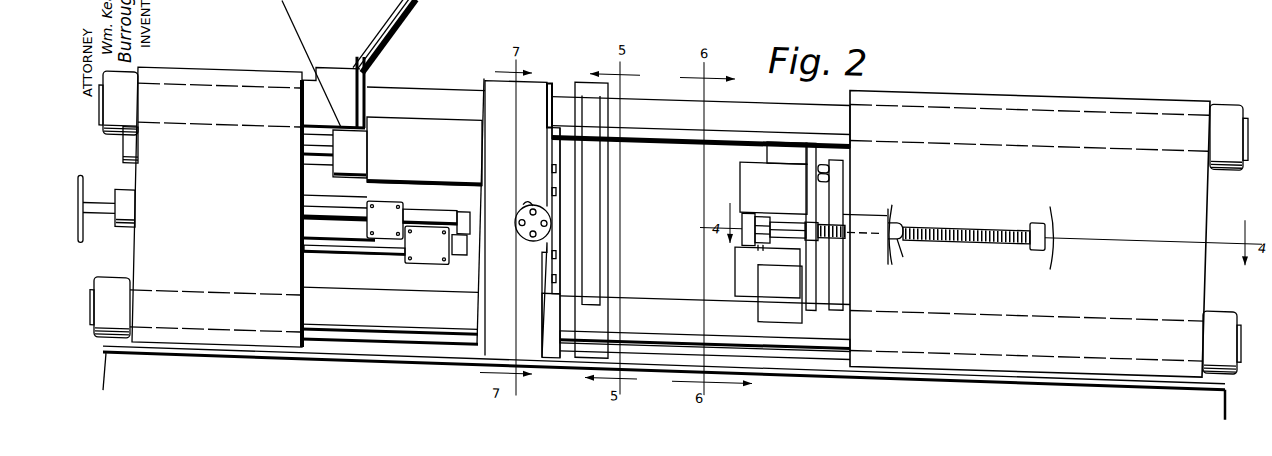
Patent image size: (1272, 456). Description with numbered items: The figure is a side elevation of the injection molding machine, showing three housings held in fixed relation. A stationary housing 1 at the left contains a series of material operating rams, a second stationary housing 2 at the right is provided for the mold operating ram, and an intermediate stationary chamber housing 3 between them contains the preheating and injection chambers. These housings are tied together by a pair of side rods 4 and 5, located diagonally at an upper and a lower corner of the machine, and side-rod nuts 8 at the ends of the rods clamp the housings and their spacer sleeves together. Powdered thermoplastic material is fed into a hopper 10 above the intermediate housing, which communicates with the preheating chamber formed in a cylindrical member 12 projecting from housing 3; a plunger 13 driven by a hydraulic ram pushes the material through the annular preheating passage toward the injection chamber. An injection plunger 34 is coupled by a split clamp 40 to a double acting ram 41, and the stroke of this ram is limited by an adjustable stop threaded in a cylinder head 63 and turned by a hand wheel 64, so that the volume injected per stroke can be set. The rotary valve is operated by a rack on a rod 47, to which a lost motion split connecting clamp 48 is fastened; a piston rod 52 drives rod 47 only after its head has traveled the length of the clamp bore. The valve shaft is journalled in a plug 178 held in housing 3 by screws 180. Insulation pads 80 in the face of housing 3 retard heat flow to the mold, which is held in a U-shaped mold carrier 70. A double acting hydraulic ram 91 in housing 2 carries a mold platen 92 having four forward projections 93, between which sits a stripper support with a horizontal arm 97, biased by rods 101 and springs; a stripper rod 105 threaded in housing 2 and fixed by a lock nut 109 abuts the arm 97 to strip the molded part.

The stationary housing 1 is at (212, 188).
The stationary housing 2 is at (1030, 219).
The intermediate stationary chamber housing 3 is at (520, 201).
The side rod 4 is at (655, 125).
The side rod 5 is at (648, 281).
The side-rod nut 8 is at (109, 124).
The hopper 10 is at (414, 0).
The cylindrical member 12 is at (378, 167).
The plunger 13 is at (332, 156).
The plunger 34 is at (455, 204).
The split clamp 40 is at (410, 202).
The double acting ram 41 is at (335, 202).
The rod 47 is at (462, 244).
The lost motion split connecting clamp 48 is at (425, 246).
The piston rod 52 is at (350, 239).
The cylinder head 63 is at (136, 199).
The hand wheel 64 is at (85, 177).
The mold carrier 70 is at (609, 201).
The insulation pads 80 is at (553, 239).
The double acting hydraulic ram 91 is at (815, 295).
The mold platen 92 is at (787, 140).
The forward projections 93 is at (745, 165).
The horizontal stripper arm 97 is at (752, 191).
The rod 101 is at (775, 257).
The stripper rod 105 is at (985, 214).
The lock nut 109 is at (898, 224).
The plug 178 is at (527, 188).
The screws 180 is at (515, 208).